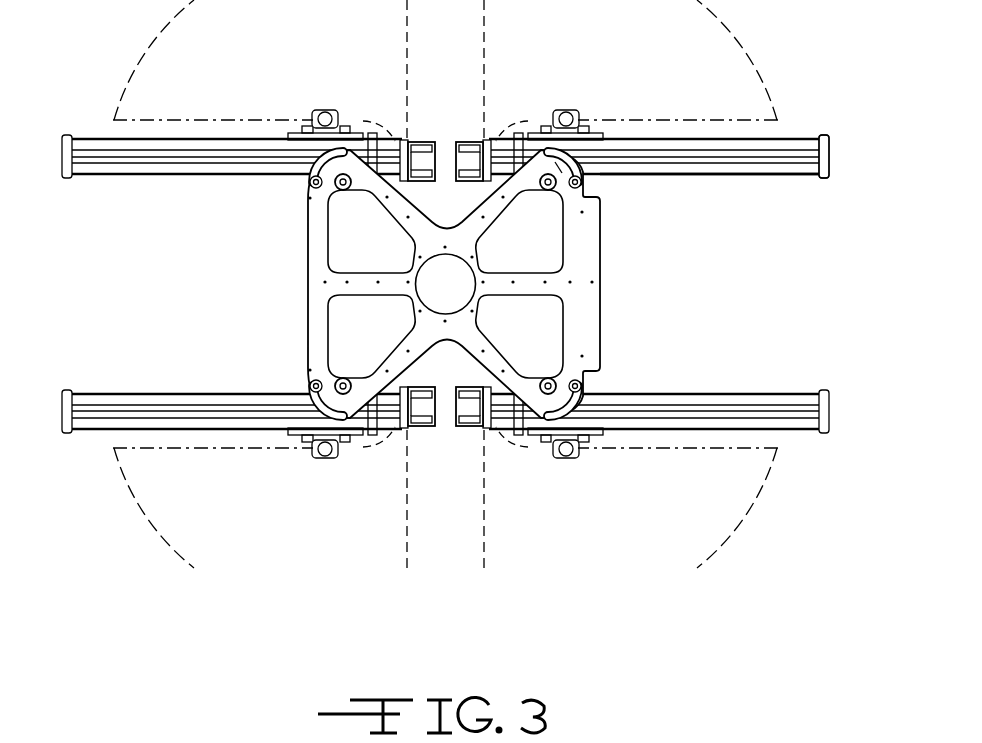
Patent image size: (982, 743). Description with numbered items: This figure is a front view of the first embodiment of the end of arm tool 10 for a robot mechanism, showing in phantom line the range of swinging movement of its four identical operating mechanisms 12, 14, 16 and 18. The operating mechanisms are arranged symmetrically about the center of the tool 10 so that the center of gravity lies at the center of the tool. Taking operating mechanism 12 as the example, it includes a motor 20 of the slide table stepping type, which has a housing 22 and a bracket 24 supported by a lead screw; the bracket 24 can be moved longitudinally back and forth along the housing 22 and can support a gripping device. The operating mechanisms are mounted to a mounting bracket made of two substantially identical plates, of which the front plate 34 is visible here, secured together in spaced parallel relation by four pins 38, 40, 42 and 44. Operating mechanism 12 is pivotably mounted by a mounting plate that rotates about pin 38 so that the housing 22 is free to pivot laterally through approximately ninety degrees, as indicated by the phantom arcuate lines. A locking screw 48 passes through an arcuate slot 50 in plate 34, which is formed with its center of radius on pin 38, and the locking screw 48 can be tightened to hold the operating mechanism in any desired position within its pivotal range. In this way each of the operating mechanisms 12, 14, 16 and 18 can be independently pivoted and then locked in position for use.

The end of arm tool 10 is at (497, 243).
The operating mechanism 12 is at (796, 137).
The operating mechanism 14 is at (706, 392).
The operating mechanism 16 is at (82, 392).
The operating mechanism 18 is at (80, 139).
The motor 20 is at (692, 139).
The housing 22 is at (781, 176).
The bracket 24 is at (565, 110).
The plate 34 is at (602, 277).
The pin 38 is at (553, 190).
The pin 40 is at (597, 364).
The pin 42 is at (322, 372).
The pin 44 is at (332, 193).
The locking screw 48 is at (583, 183).
The arcuate slot 50 is at (578, 165).